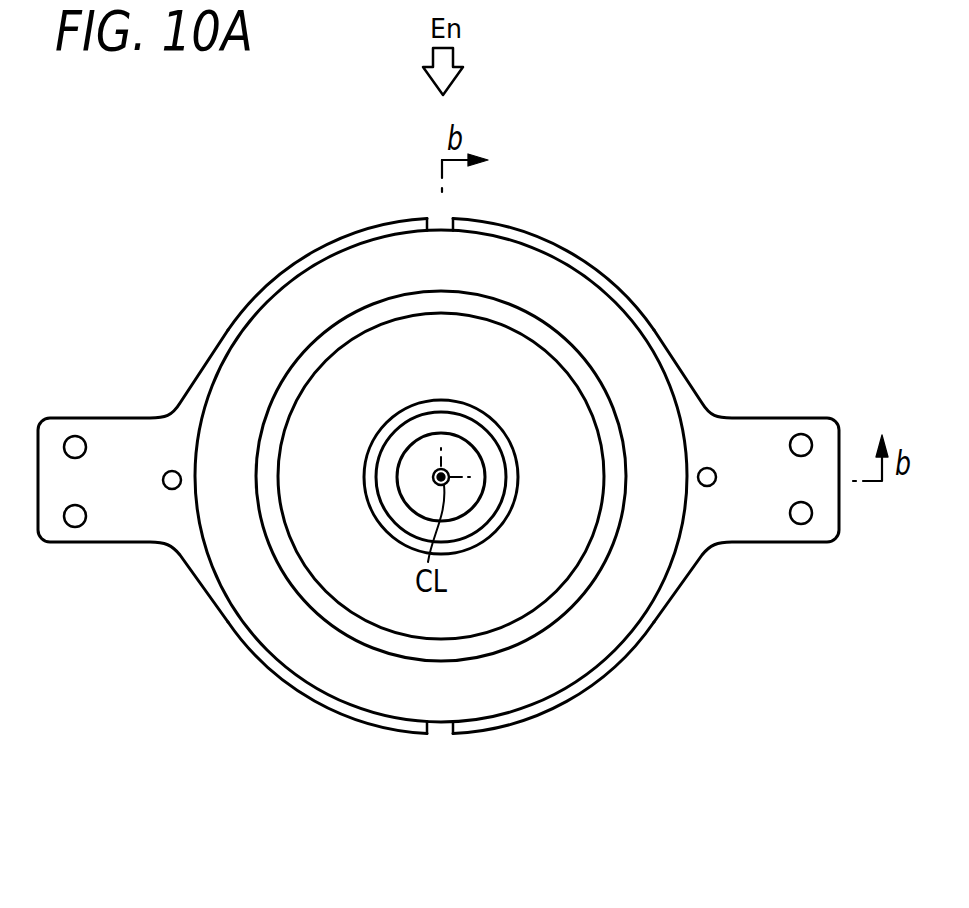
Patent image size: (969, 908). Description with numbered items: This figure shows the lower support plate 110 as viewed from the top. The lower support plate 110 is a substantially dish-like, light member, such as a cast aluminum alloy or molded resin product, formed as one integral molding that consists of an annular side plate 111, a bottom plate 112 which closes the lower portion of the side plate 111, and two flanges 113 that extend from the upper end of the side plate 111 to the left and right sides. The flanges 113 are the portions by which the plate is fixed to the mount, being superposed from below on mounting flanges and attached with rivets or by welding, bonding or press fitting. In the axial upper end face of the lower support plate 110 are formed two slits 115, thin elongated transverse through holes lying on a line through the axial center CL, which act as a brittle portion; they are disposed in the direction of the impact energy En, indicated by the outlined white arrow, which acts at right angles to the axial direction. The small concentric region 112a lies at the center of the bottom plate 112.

The lower support plate 110 is at (438, 473).
The annular side plate 111 is at (637, 307).
The bottom plate 112 is at (563, 297).
The central hub portion 112a is at (433, 475).
The flange 113 is at (103, 442).
The slit 115 is at (443, 223).